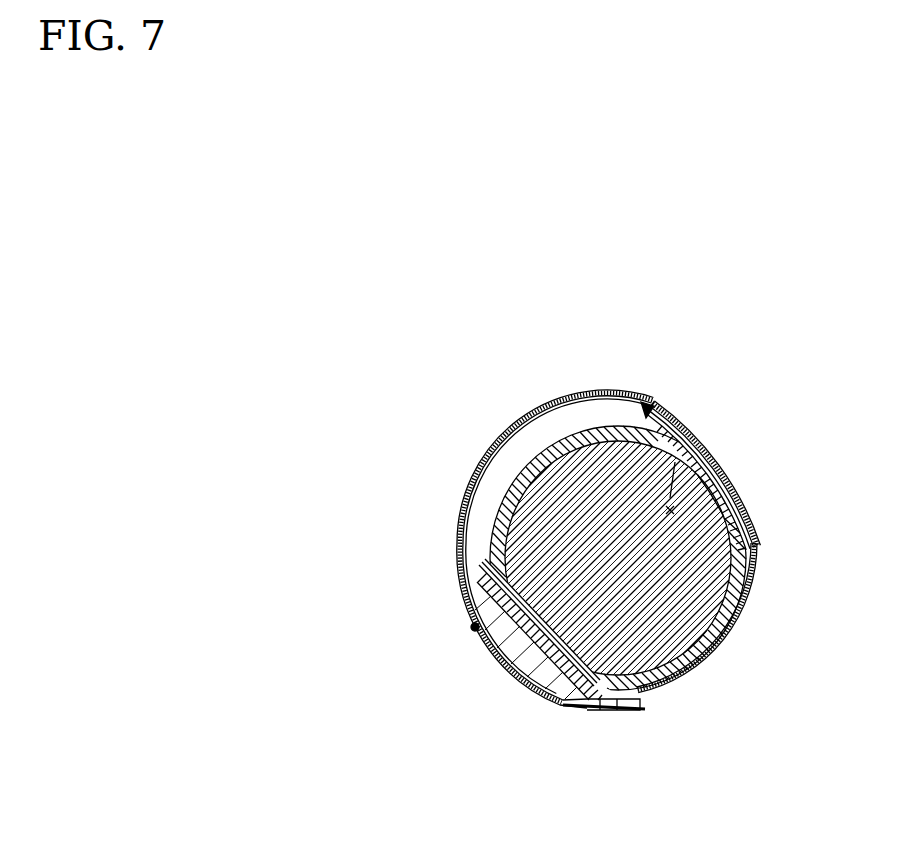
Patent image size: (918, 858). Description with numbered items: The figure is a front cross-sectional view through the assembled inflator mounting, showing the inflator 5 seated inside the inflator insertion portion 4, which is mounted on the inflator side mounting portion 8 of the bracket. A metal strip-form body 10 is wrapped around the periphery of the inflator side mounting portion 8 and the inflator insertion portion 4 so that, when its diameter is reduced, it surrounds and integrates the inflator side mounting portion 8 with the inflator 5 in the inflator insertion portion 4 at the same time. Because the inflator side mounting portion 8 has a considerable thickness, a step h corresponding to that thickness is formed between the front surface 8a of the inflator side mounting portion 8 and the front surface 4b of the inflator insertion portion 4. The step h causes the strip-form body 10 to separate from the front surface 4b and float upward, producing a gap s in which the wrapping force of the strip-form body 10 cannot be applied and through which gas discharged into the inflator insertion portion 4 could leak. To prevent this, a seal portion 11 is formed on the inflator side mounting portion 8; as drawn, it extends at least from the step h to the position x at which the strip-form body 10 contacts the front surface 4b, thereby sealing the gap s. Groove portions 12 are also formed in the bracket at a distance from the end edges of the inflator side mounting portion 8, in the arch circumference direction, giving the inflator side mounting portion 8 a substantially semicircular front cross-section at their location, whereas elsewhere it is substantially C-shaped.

The inflator insertion portion 4 is at (640, 522).
The front surface of the inflator insertion portion 4b is at (656, 404).
The inflator 5 is at (706, 604).
The inflator side mounting portion 8 is at (475, 627).
The front surface of the inflator side mounting portion 8a is at (553, 400).
The strip-form body 10 is at (668, 411).
The seal portion 11 is at (703, 428).
The groove portions 12 is at (650, 392).
The step h is at (641, 398).
The gap s is at (574, 714).
The position x is at (628, 712).